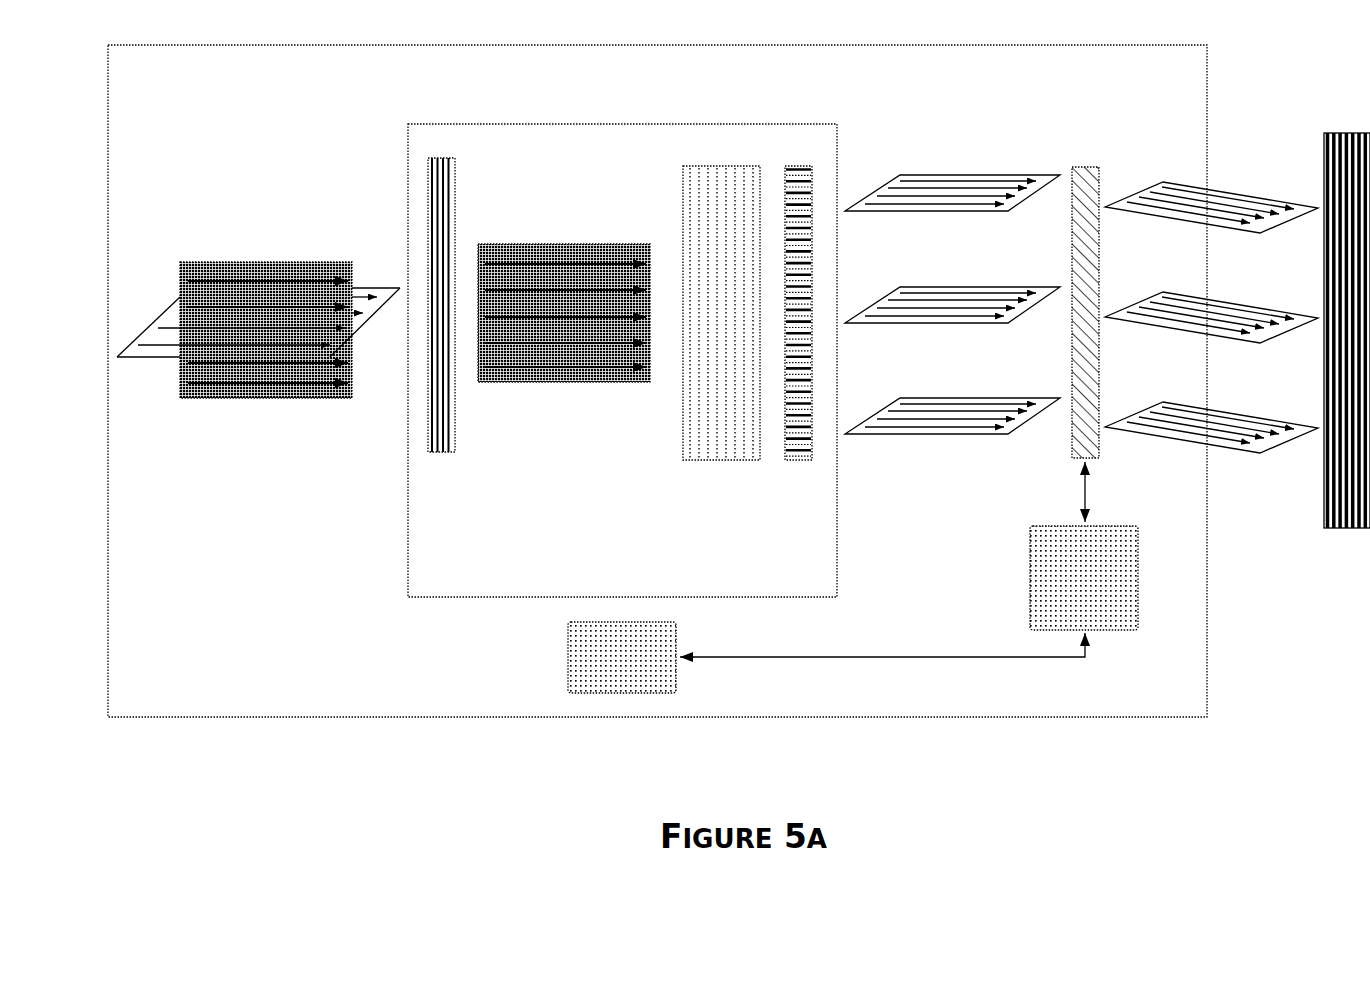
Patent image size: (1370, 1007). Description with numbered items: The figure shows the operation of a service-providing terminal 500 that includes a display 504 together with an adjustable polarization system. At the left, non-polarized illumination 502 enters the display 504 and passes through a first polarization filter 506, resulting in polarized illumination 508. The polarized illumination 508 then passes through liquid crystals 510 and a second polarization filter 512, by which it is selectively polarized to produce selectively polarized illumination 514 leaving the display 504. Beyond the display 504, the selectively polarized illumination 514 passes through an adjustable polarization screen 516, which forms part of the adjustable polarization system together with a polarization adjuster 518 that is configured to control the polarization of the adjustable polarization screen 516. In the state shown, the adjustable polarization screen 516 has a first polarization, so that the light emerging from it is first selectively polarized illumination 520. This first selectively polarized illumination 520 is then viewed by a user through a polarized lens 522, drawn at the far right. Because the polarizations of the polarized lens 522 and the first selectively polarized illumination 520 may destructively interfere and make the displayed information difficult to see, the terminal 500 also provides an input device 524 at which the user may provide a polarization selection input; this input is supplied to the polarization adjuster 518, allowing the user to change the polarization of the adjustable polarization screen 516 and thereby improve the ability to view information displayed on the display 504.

The service-providing terminal 500 is at (1146, 695).
The non-polarized illumination 502 is at (261, 241).
The display 504 is at (436, 572).
The first polarization filter 506 is at (467, 190).
The polarized illumination 508 is at (560, 237).
The liquid crystals 510 is at (670, 415).
The second polarization filter 512 is at (802, 468).
The selectively polarized illumination 514 is at (958, 452).
The adjustable polarization screen 516 is at (1089, 148).
The polarization adjuster 518 is at (1066, 590).
The first selectively polarized illumination 520 is at (1215, 455).
The polarized lens 522 is at (1366, 553).
The input device 524 is at (603, 669).